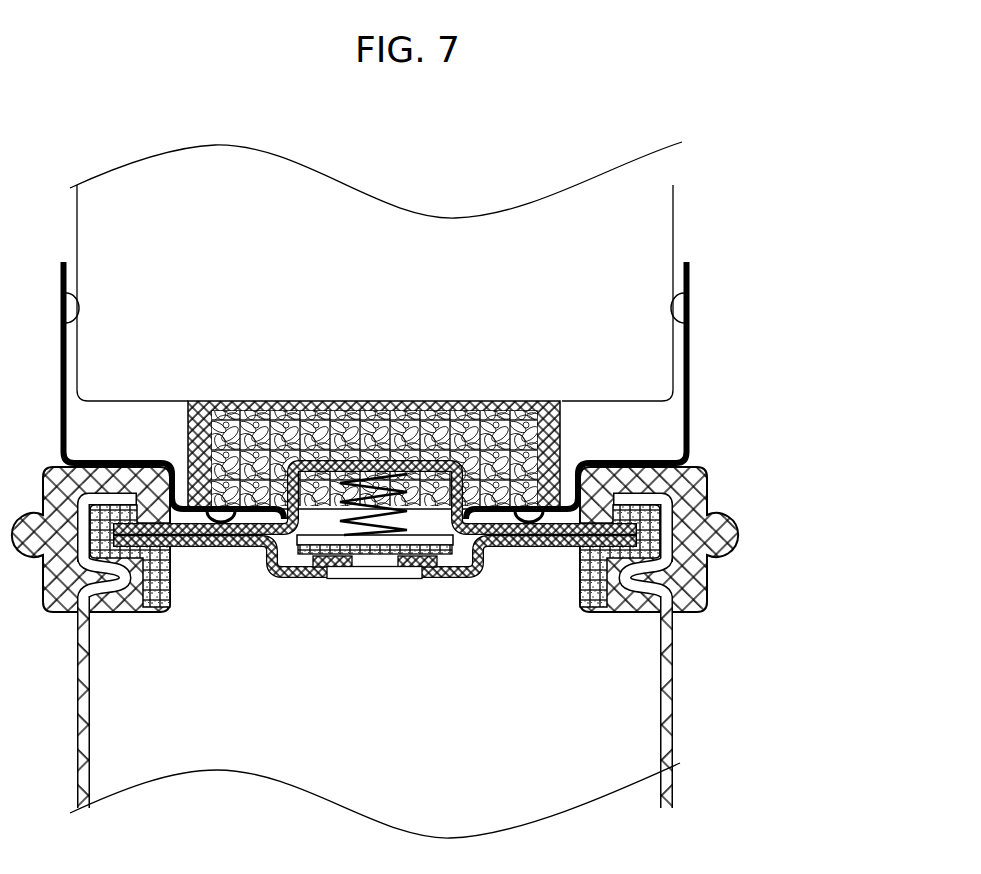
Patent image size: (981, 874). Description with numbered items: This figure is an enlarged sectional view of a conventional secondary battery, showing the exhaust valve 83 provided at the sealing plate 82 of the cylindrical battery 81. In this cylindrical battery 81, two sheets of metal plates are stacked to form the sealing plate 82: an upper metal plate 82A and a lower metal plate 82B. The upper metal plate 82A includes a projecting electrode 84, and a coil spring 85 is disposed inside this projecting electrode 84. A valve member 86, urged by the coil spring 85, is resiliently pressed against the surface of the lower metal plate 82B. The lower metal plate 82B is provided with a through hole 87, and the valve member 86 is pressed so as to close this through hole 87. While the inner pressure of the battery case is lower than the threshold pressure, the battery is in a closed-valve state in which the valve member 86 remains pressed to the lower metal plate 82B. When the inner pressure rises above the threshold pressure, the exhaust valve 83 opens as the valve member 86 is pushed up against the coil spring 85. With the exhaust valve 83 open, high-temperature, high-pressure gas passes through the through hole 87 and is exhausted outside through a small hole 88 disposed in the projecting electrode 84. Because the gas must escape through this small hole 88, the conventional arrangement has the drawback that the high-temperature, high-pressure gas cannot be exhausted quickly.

The cylindrical battery 81 is at (713, 227).
The sealing plate 82 is at (375, 645).
The upper metal plate 82A is at (203, 548).
The lower metal plate 82B is at (237, 548).
The exhaust valve 83 is at (328, 487).
The projecting electrode 84 is at (383, 462).
The coil spring 85 is at (358, 515).
The valve member 86 is at (367, 557).
The through hole 87 is at (385, 567).
The small hole 88 is at (465, 527).